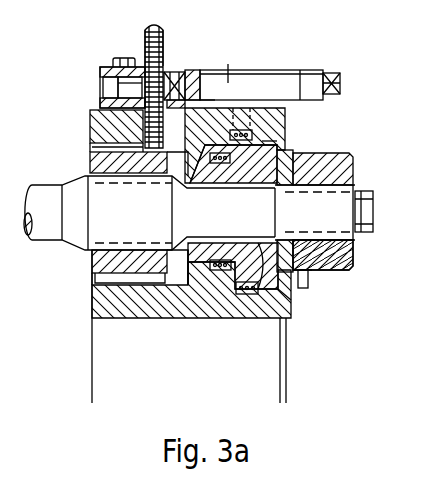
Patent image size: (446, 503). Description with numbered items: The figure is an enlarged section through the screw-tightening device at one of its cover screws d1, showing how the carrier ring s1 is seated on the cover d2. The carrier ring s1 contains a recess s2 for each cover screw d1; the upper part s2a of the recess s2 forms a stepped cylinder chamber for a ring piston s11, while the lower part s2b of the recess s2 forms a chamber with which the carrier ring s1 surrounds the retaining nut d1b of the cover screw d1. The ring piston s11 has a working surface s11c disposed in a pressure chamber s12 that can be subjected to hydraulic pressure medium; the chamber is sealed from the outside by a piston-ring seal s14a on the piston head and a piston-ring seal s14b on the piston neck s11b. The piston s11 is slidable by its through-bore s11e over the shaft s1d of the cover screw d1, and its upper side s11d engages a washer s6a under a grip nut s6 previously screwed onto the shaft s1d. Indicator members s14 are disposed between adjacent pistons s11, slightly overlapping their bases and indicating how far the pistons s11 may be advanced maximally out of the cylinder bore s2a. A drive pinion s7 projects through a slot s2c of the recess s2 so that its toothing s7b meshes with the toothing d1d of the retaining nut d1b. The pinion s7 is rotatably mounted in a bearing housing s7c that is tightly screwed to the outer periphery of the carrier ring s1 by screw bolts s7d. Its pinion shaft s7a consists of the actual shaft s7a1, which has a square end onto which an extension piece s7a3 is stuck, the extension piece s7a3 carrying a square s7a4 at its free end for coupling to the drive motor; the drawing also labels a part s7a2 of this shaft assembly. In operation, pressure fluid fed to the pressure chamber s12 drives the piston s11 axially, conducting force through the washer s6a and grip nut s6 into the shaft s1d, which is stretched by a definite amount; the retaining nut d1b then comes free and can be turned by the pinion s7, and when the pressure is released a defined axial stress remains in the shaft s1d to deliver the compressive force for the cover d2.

The drive pinion s7 is at (157, 23).
The toothing of pinion s7b is at (147, 33).
The actual shaft s7a1 is at (100, 69).
The bearing housing s7c is at (102, 103).
The screw bolts s7d is at (121, 58).
The toothing of retaining nut d1d is at (106, 139).
The slot s2c is at (170, 123).
The lever arm s7a2 is at (188, 66).
The pinion shaft s7a is at (254, 63).
The extension piece s7a3 is at (306, 77).
The square s7a4 is at (341, 79).
The carrier ring s1 is at (287, 316).
The pressure chamber s12 is at (233, 141).
The recess s2 is at (178, 277).
The lower part of recess s2b is at (123, 283).
The upper part of recess s2a is at (288, 297).
The piston-ring seal on piston neck s14b is at (240, 295).
The piston-ring seal on piston head s14a is at (217, 280).
The ring piston s11 is at (253, 270).
The piston neck s11b is at (190, 272).
The cover screw d1 is at (44, 193).
The retaining nut d1b is at (100, 258).
The grip nut s6 is at (344, 169).
The washer s6a is at (353, 250).
The shaft of cover screw s1d is at (335, 152).
The through-bore of piston s11e is at (286, 273).
The upper side of piston s11d is at (350, 265).
The indicator member s14 is at (311, 278).
The working surface s11c is at (262, 142).
The cover d2 is at (82, 372).